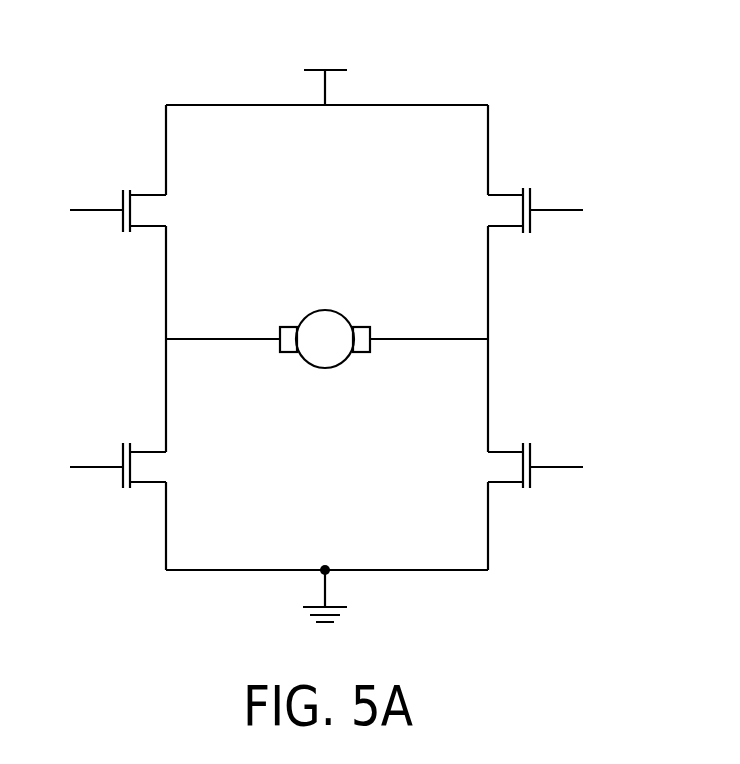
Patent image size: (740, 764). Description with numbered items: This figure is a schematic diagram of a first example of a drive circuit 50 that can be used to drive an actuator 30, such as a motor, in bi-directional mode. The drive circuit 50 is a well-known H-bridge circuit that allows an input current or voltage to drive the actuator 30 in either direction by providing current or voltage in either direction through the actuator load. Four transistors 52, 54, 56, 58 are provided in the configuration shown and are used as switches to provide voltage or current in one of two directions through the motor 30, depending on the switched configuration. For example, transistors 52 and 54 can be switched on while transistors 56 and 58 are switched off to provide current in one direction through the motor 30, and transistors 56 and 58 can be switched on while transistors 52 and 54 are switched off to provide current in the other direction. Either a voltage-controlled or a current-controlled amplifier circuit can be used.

The drive circuit 50 is at (461, 62).
The transistor 52 is at (97, 195).
The transistor 54 is at (551, 450).
The transistor 56 is at (97, 452).
The transistor 58 is at (551, 193).
The actuator 30 is at (333, 287).